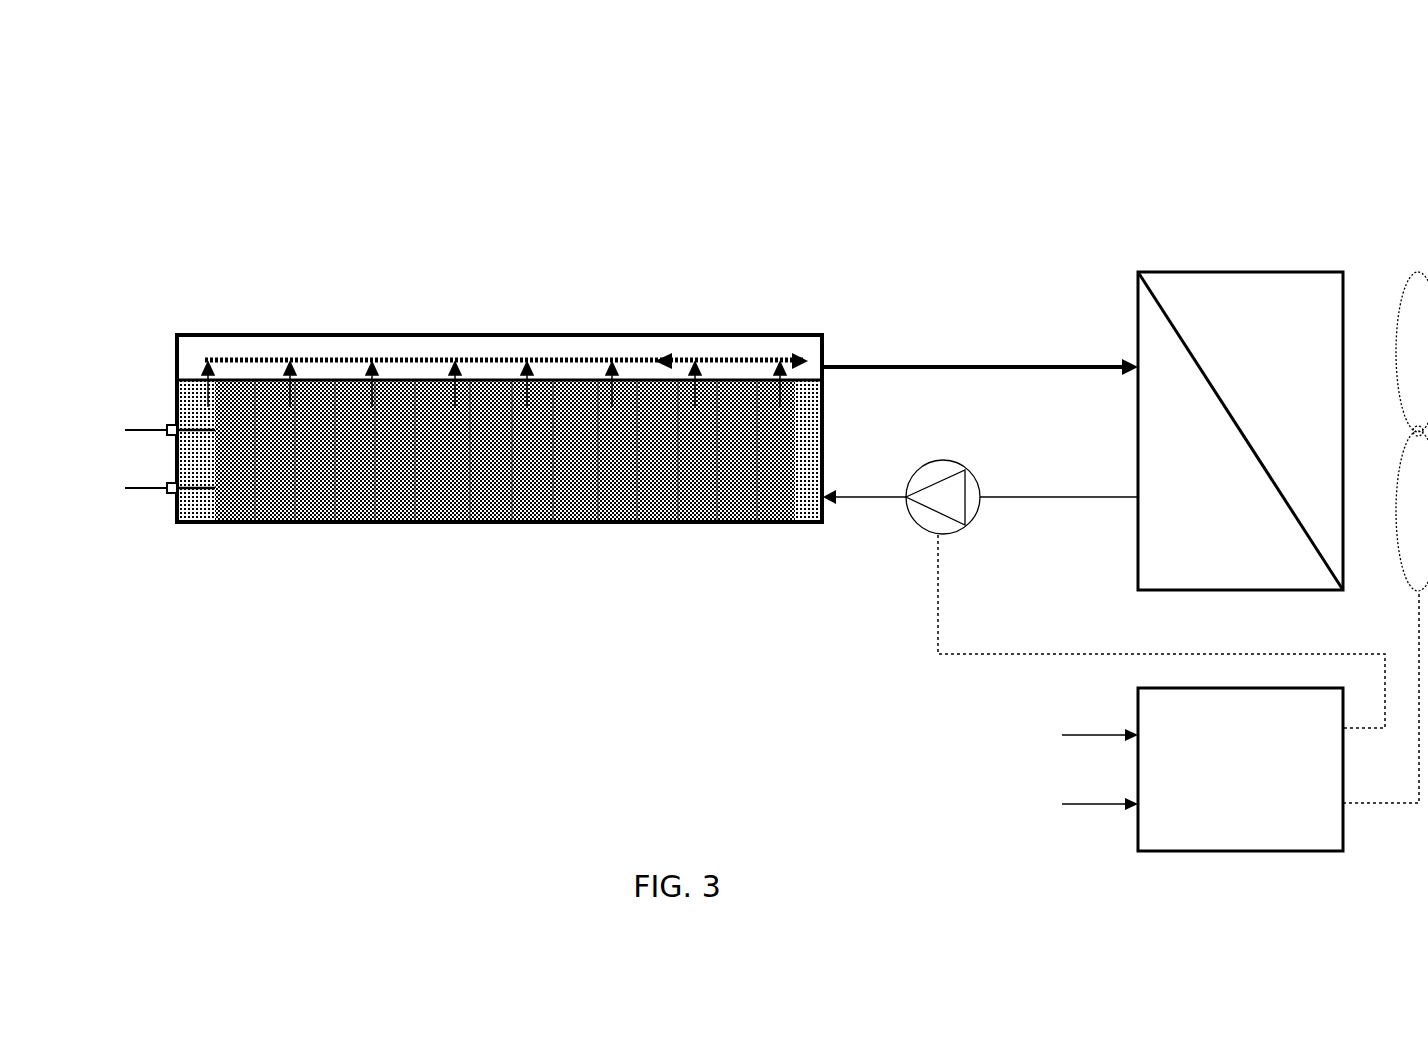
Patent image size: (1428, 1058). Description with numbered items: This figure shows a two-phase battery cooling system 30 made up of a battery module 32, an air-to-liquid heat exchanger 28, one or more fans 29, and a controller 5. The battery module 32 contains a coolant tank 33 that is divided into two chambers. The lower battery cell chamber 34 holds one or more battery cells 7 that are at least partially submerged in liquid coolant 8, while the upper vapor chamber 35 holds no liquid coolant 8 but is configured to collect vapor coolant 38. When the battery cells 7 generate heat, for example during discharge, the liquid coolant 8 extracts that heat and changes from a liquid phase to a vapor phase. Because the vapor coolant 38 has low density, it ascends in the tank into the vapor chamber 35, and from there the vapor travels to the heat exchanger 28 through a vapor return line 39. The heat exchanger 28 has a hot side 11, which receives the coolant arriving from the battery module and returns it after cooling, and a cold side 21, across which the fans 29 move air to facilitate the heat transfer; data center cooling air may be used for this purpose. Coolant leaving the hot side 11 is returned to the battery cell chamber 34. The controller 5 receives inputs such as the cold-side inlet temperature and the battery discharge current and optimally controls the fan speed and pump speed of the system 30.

The two-phase battery cooling system 30 is at (304, 141).
The battery module 32 is at (510, 612).
The battery cell chamber 34 is at (695, 502).
The liquid coolant 8 is at (197, 507).
The battery cells 7 is at (458, 448).
The vapor chamber 35 is at (200, 348).
The coolant tank 33 is at (398, 338).
The vapor coolant 38 is at (700, 357).
The vapor return line 39 is at (873, 365).
The air-to-liquid heat exchanger 28 is at (1175, 272).
The hot side 11 is at (1202, 431).
The cold side 21 is at (1263, 431).
The fans 29 is at (1376, 233).
The controller 5 is at (1240, 769).